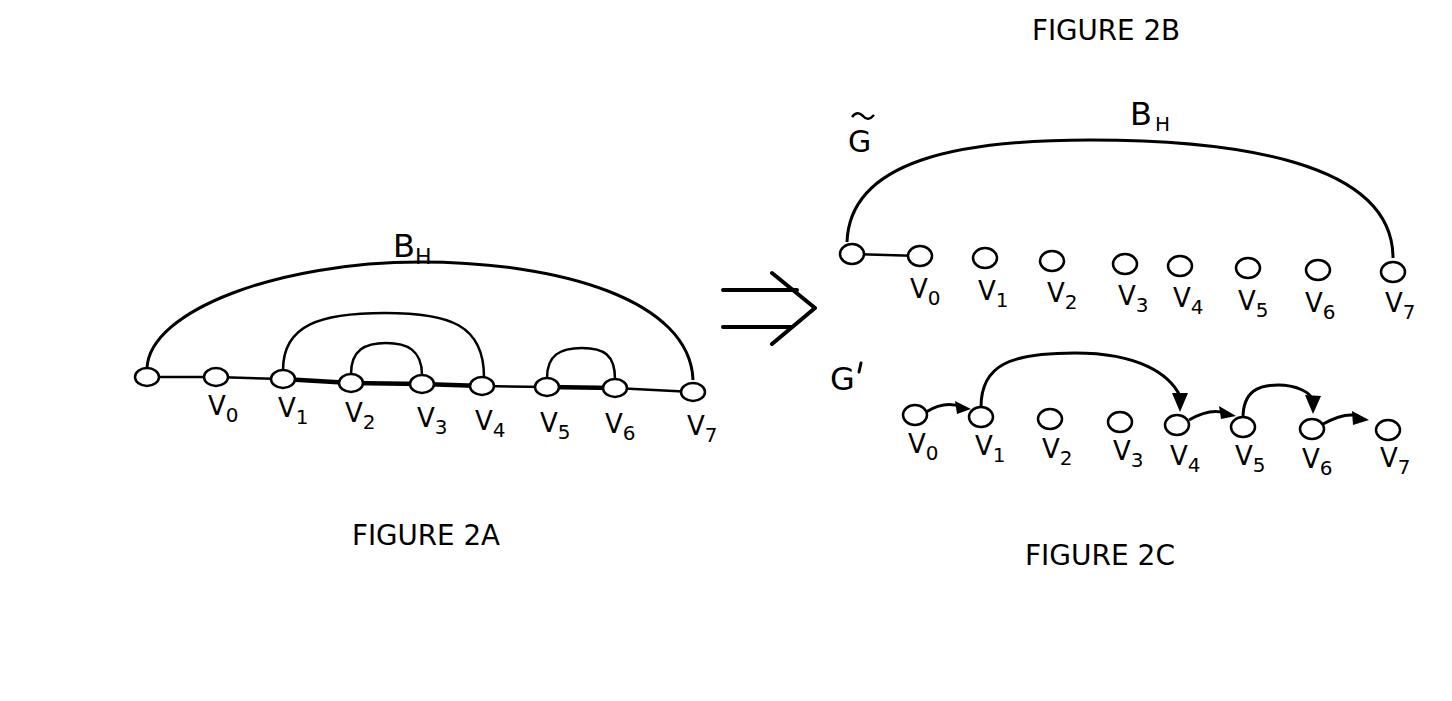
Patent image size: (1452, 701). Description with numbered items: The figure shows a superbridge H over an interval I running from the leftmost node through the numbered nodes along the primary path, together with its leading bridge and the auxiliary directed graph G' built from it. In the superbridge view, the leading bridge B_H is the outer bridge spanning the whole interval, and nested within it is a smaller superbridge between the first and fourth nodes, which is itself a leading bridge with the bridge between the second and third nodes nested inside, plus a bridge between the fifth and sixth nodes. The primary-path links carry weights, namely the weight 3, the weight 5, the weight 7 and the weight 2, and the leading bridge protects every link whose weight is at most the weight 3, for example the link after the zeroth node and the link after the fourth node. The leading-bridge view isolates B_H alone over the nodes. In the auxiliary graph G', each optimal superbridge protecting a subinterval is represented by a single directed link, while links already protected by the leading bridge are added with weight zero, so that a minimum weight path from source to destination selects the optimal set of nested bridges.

The edge weight 2 (v6-v7) 2 is at (654, 374).
The edge weight 3 is at (381, 365).
The edge weight 5 is at (449, 366).
The edge weight 7 (v2-v3) 7 is at (386, 365).